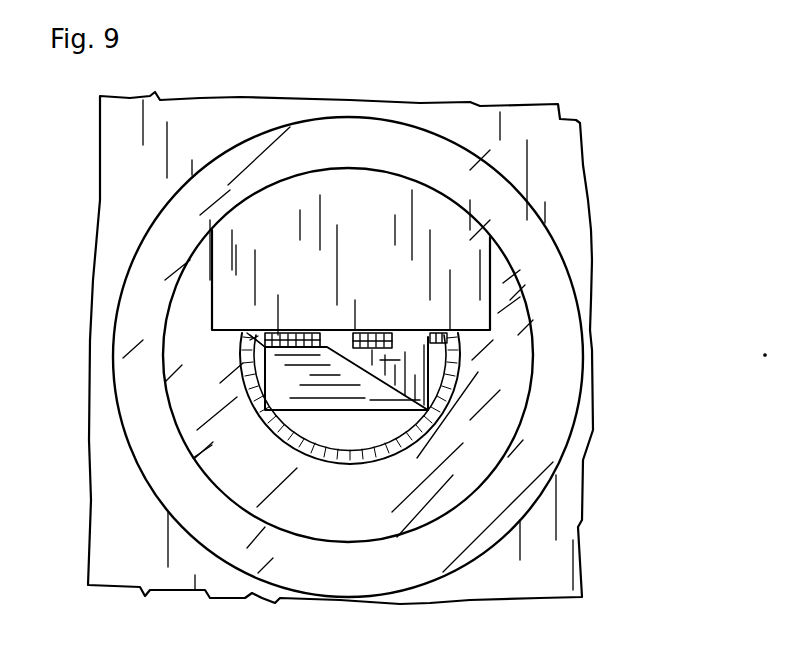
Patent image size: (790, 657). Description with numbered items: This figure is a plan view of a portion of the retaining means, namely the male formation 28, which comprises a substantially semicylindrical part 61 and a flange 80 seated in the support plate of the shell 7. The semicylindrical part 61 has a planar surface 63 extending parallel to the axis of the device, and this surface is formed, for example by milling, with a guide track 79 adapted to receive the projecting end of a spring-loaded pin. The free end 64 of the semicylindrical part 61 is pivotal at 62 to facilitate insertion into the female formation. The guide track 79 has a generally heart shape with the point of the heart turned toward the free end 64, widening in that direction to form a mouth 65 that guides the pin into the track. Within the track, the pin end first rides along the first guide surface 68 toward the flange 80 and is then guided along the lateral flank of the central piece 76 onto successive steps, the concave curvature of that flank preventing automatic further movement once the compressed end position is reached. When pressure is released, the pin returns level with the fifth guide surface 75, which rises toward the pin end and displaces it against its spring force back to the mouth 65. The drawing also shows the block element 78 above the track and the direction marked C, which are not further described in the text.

The shell 7 is at (543, 132).
The male formation 28 is at (555, 377).
The flange 80 is at (502, 282).
The block 78 is at (423, 220).
The pivot 62 is at (247, 378).
The mouth 65 is at (336, 390).
The free end 64 is at (407, 367).
The semicylindrical part 61 is at (445, 391).
The first guide surface 68 is at (290, 333).
The planar surface 63 is at (302, 333).
The guide track 79 is at (310, 333).
The central piece 76 is at (377, 333).
The fifth guide surface 75 is at (378, 333).
The direction arrow C is at (379, 212).